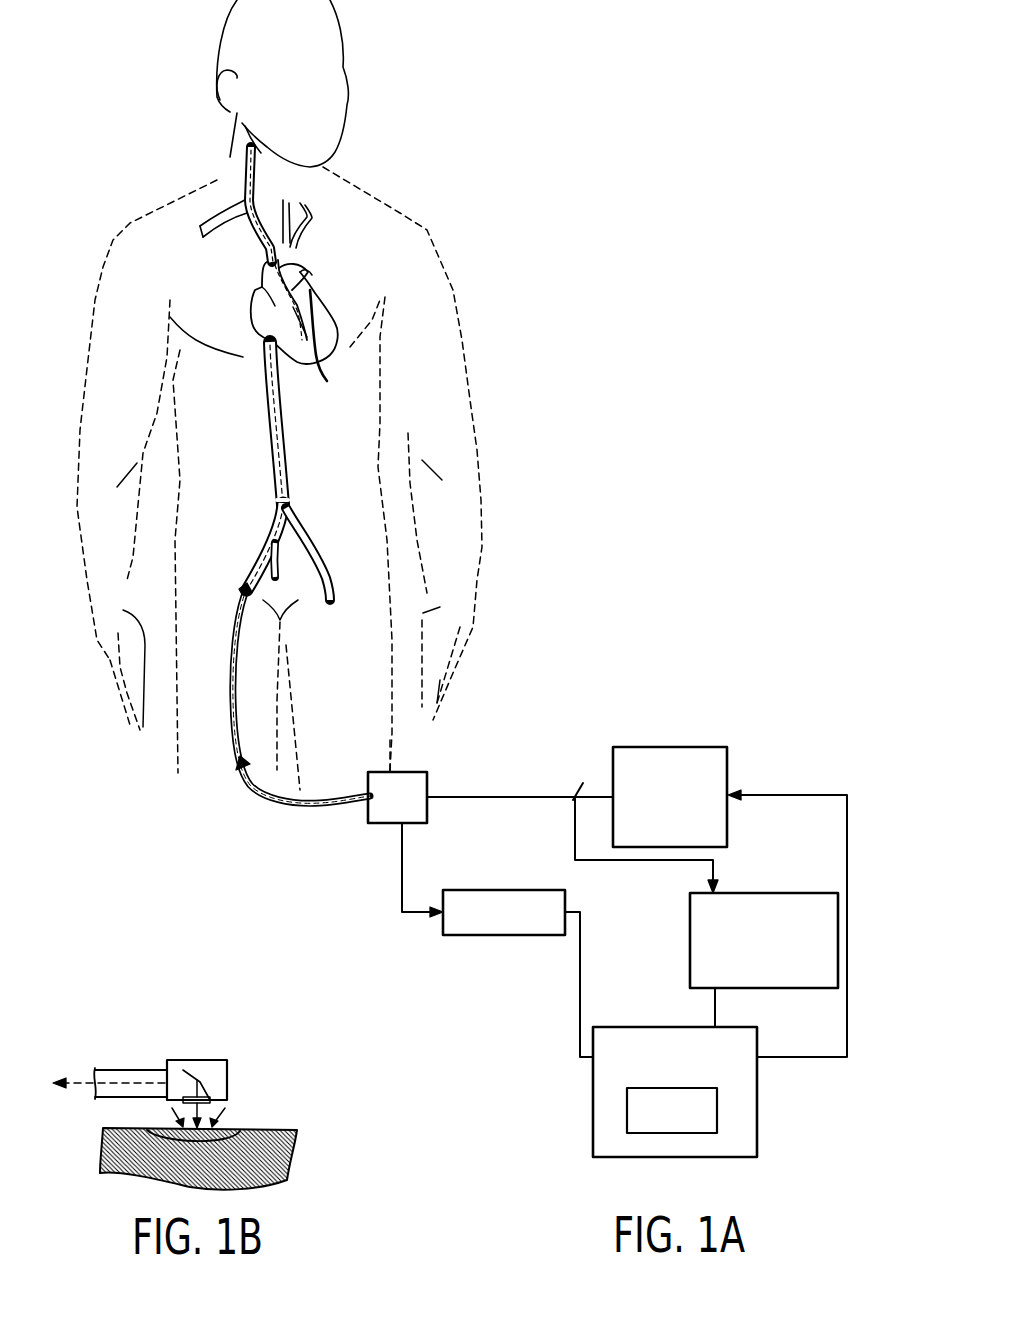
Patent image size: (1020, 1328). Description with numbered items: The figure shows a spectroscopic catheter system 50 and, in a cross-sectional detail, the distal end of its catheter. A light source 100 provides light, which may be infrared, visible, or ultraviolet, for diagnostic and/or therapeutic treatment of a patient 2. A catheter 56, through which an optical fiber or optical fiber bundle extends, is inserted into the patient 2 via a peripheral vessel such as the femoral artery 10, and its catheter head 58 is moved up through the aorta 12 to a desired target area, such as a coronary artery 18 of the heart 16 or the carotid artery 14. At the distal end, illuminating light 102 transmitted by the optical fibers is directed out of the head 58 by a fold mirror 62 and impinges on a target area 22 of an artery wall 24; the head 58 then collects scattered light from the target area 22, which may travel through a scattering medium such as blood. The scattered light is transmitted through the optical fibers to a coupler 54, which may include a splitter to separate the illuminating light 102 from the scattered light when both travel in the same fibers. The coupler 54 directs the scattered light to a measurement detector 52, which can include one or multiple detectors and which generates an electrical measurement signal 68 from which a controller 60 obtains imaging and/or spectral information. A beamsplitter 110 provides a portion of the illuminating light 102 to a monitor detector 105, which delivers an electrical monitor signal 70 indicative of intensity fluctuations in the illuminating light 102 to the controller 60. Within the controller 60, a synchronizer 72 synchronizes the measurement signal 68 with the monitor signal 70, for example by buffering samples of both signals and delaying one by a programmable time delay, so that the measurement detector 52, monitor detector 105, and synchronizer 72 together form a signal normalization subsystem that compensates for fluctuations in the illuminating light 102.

In FIG. 1A, the patient 2 is at (480, 547).
In FIG. 1A, the femoral artery 10 is at (260, 553).
In FIG. 1A, the aorta 12 is at (273, 443).
In FIG. 1A, the carotid artery 14 is at (247, 180).
In FIG. 1A, the heart 16 is at (327, 307).
In FIG. 1A, the coronary artery 18 is at (307, 277).
In FIG. 1B, the target area 22 is at (240, 1128).
In FIG. 1B, the artery wall 24 is at (293, 1153).
In FIG. 1A, the spectroscopic catheter system 50 is at (500, 725).
In FIG. 1A, the measurement detector 52 is at (566, 906).
In FIG. 1A, the coupler 54 is at (410, 772).
In FIG. 1A, the catheter 56 is at (268, 790).
In FIG. 1B, the catheter 56 is at (110, 1067).
In FIG. 1A, the catheter head 58 is at (333, 346).
In FIG. 1B, the catheter head 58 is at (228, 1077).
In FIG. 1A, the controller 60 is at (593, 1067).
In FIG. 1B, the fold mirror 62 is at (197, 1067).
In FIG. 1A, the electrical measurement signal 68 is at (580, 985).
In FIG. 1A, the electrical monitor signal 70 is at (713, 1013).
In FIG. 1A, the synchronizer 72 is at (680, 1128).
In FIG. 1A, the light source 100 is at (697, 747).
In FIG. 1A, the illuminating light 102 is at (553, 797).
In FIG. 1B, the illuminating light 102 is at (123, 1081).
In FIG. 1A, the monitor detector 105 is at (783, 988).
In FIG. 1A, the beamsplitter 110 is at (570, 801).